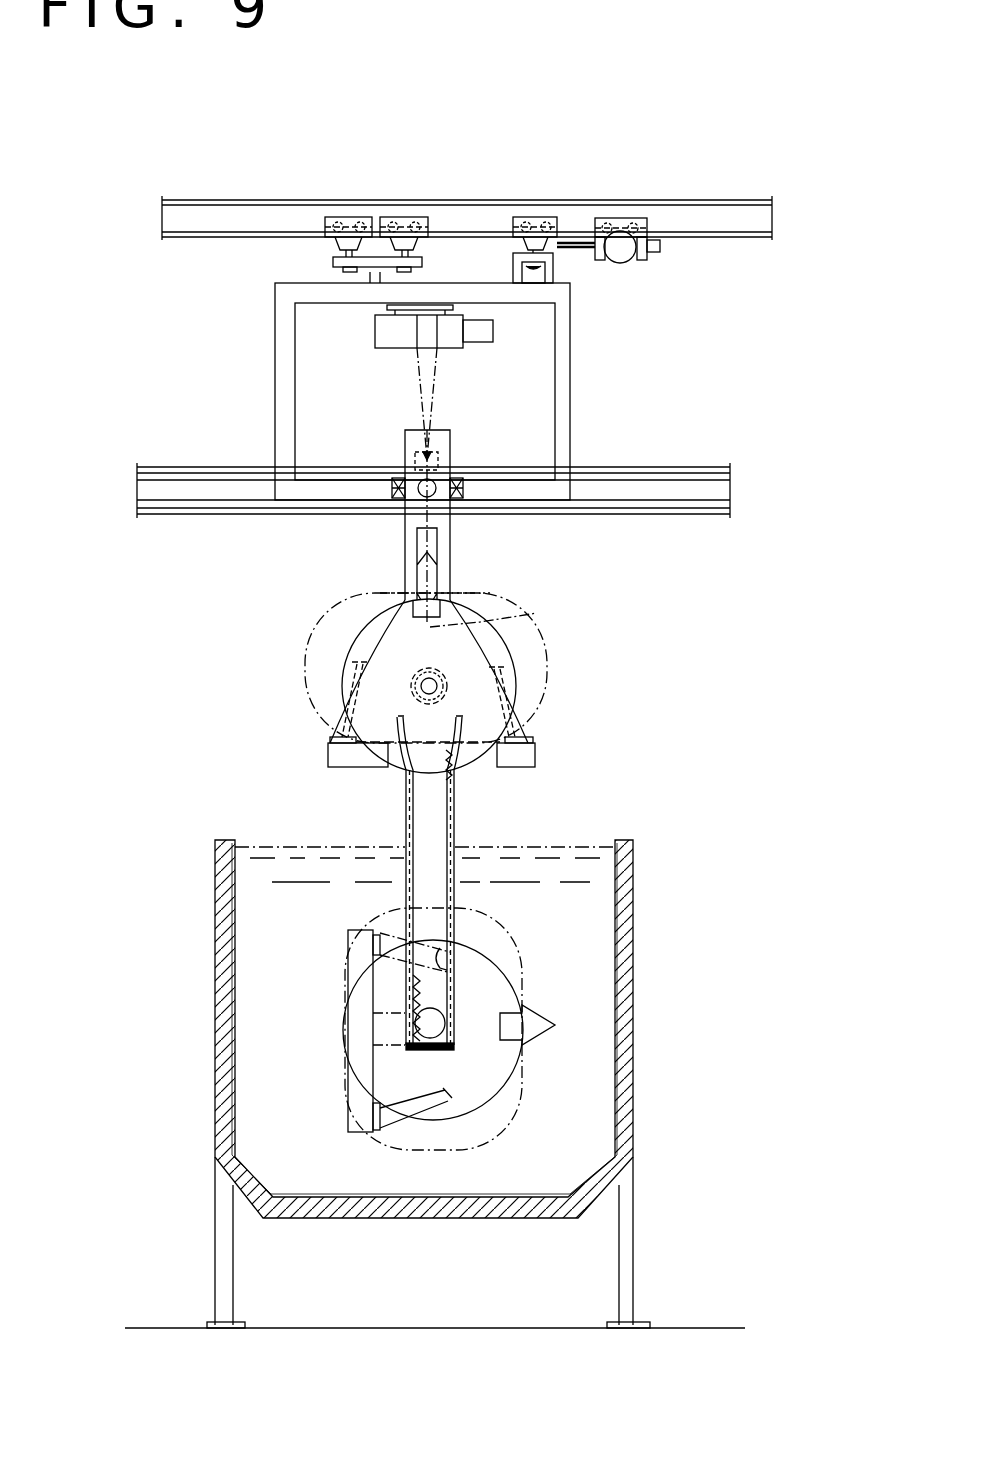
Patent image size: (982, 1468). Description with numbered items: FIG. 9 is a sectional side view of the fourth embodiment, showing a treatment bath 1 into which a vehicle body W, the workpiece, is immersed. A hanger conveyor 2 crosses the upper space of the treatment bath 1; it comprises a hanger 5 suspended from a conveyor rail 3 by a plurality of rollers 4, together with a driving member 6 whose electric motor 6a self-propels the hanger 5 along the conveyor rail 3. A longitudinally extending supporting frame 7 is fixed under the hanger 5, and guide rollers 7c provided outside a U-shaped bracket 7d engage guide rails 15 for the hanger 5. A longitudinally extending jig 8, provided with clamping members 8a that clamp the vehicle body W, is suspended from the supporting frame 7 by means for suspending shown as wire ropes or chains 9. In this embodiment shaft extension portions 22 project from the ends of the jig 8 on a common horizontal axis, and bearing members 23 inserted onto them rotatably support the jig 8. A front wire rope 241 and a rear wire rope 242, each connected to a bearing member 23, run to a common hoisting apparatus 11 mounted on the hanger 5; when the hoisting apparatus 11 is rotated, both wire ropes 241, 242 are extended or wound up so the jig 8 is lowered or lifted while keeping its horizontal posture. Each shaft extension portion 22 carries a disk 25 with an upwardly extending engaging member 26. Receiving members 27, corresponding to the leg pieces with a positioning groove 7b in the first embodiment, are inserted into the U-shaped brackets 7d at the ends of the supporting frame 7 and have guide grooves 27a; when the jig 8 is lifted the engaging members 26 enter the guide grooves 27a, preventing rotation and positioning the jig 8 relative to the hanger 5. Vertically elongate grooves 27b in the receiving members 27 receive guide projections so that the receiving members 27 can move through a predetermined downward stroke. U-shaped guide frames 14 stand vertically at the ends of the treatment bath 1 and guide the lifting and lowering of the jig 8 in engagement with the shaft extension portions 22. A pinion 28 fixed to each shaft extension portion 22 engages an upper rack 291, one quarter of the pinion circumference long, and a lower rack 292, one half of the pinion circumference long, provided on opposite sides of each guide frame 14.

The treatment bath 1 is at (216, 990).
The hanger conveyor 2 is at (456, 188).
The conveyor rail 3 is at (205, 216).
The rollers 4 is at (360, 216).
The hanger 5 is at (572, 367).
The driving member 6 is at (618, 227).
The electric motor 6a is at (626, 258).
The supporting frame 7 is at (435, 492).
The positioning groove 7b is at (437, 484).
The guide rollers 7c is at (457, 482).
The U-shaped brackets 7d is at (407, 472).
The jig 8 is at (340, 753).
The clamping members 8a is at (357, 657).
The wire ropes or chains 9 is at (491, 614).
The common hoisting apparatus 11 is at (387, 325).
The guide frames 14 is at (406, 810).
The guide rails 15 is at (203, 493).
The shaft extension portions 22 is at (417, 693).
The bearing members 23 is at (508, 636).
The front wire rope 241 is at (418, 365).
The rear wire rope 242 is at (433, 365).
The disk 25 is at (482, 715).
The engaging member 26 is at (435, 575).
The receiving members 27 is at (427, 507).
The guide grooves 27a is at (420, 542).
The vertically elongate grooves 27b is at (434, 458).
The pinion 28 is at (422, 680).
The upper rack 291 is at (447, 772).
The lower rack 292 is at (410, 995).
The vehicle body W is at (532, 717).